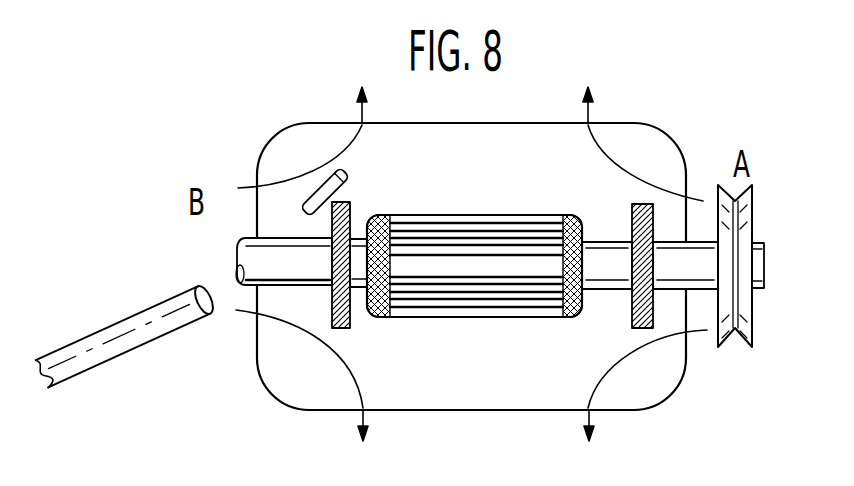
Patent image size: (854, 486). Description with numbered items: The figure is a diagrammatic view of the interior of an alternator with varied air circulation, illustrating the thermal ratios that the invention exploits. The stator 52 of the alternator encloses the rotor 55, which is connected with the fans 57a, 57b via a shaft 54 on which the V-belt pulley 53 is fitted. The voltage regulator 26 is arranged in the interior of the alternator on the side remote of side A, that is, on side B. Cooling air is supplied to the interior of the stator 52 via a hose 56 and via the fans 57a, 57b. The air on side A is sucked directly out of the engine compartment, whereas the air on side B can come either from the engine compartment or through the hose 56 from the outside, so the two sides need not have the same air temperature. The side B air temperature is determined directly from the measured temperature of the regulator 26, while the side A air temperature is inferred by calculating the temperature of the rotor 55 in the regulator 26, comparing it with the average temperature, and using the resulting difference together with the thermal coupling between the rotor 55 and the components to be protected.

The voltage regulator 26 is at (344, 178).
The stator 52 is at (489, 412).
The V-belt pulley 53 is at (744, 318).
The shaft 54 is at (240, 250).
The rotor 55 is at (469, 215).
The hose 56 is at (103, 343).
The fan 57a is at (636, 207).
The fan 57b is at (351, 208).